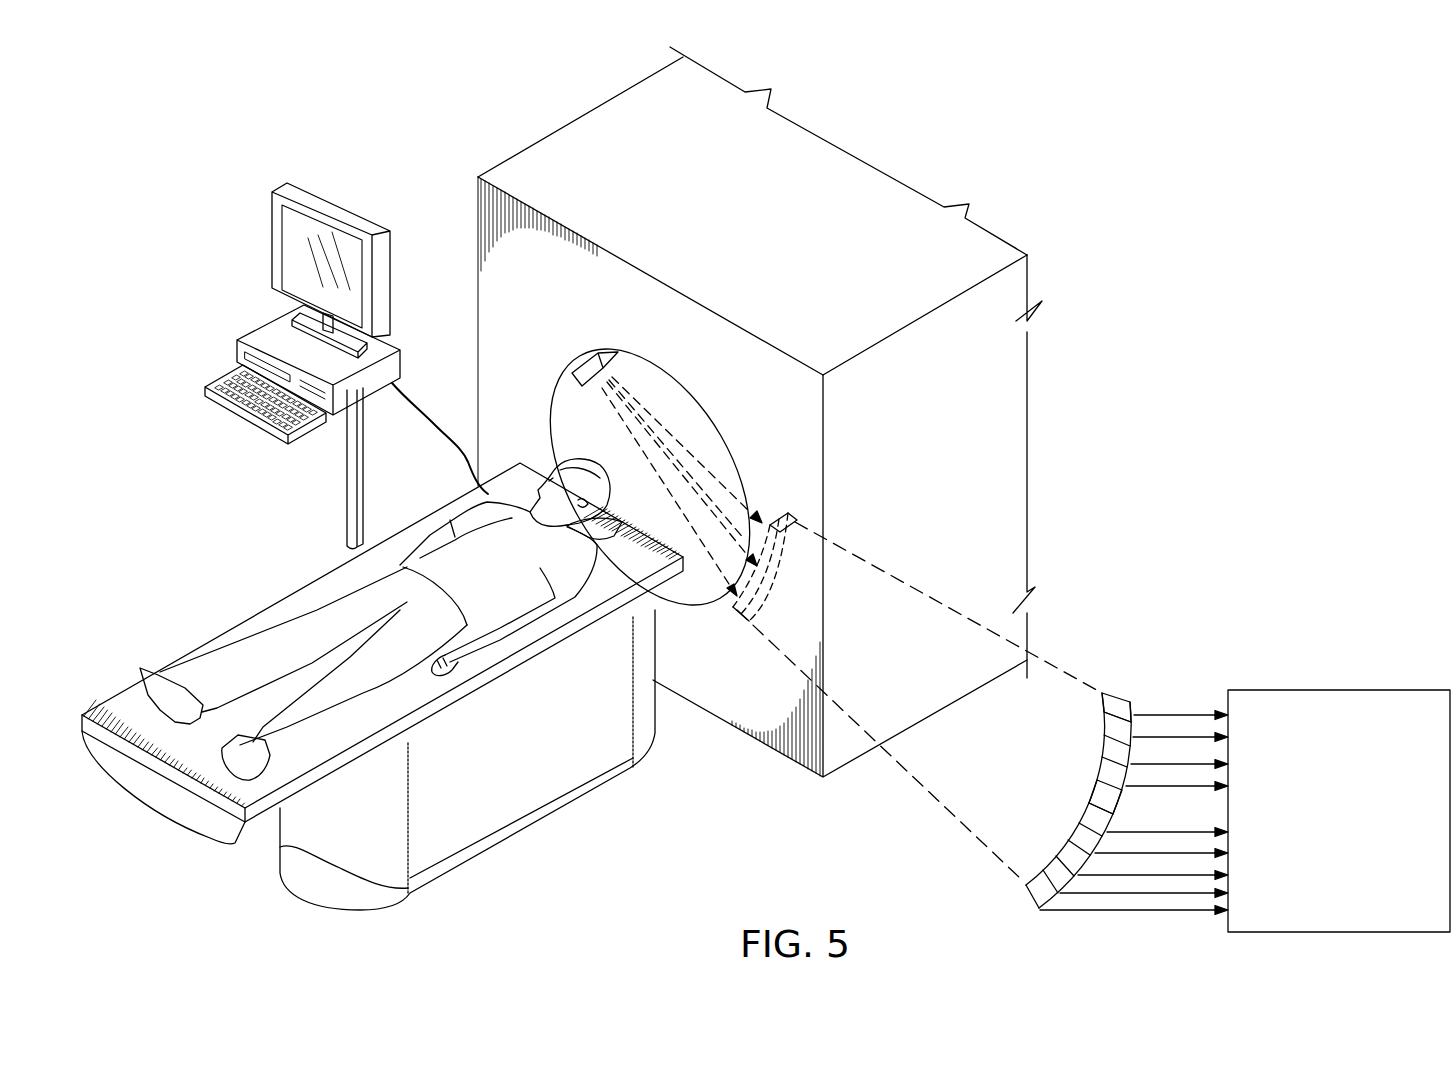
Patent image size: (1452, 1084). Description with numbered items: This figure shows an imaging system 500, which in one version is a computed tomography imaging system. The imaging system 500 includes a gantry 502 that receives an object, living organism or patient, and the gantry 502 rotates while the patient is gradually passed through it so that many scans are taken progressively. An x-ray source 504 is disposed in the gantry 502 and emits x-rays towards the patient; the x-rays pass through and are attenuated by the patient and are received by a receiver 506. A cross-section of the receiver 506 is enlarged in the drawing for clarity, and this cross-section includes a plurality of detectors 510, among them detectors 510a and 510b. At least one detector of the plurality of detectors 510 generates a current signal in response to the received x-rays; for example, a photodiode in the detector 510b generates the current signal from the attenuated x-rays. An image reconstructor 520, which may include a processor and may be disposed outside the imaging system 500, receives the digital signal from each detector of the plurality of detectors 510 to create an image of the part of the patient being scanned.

The imaging system 500 is at (662, 478).
The gantry 502 is at (704, 413).
The x-ray source 504 is at (585, 356).
The receiver 506 is at (800, 562).
The plurality of detectors 510 is at (1104, 775).
The detector 510a is at (1113, 707).
The detector 510b is at (1103, 793).
The image reconstructor 520 is at (1317, 857).